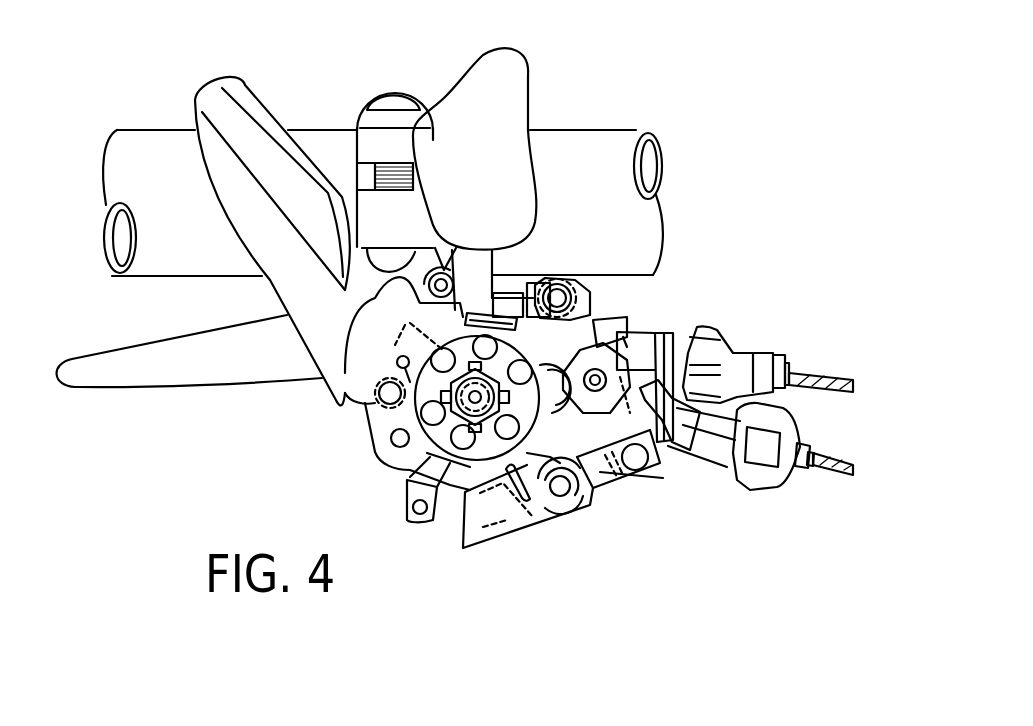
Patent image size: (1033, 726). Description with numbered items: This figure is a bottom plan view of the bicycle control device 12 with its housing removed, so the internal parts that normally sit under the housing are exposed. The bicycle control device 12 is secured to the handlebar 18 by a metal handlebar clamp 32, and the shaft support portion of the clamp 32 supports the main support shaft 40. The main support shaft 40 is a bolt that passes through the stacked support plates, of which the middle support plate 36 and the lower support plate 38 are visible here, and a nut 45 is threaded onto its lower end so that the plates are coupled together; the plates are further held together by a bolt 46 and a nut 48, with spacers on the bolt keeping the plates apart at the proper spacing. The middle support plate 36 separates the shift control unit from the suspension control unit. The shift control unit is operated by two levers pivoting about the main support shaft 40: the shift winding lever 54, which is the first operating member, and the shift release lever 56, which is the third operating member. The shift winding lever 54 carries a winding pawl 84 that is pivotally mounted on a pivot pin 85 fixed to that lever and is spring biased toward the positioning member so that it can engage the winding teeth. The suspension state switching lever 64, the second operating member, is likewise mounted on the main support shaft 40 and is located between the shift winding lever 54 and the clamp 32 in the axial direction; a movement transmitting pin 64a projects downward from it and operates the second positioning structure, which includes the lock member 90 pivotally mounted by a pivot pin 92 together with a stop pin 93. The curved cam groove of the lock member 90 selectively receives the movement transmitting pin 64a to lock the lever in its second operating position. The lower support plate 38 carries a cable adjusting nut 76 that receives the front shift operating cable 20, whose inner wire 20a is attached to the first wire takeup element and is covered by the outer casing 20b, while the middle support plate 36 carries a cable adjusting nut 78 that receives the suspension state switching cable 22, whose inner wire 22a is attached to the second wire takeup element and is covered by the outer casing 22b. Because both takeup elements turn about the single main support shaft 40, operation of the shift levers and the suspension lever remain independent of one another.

The bicycle control device 12 is at (718, 238).
The handlebar 18 is at (613, 130).
The front shift operating cable 20 is at (847, 557).
The inner wire 20a is at (833, 480).
The outer casing 20b is at (787, 482).
The suspension state switching cable 22 is at (862, 308).
The inner wire 22a is at (830, 372).
The outer casing 22b is at (780, 352).
The handlebar clamp 32 is at (367, 97).
The middle support plate 36 is at (656, 446).
The lower support plate 38 is at (657, 332).
The main support shaft 40 is at (375, 422).
The nut 45 is at (480, 462).
The bolt 46 is at (590, 300).
The nut 48 is at (567, 280).
The shift winding lever 54 is at (205, 85).
The shift release lever 56 is at (102, 393).
The suspension state switching lever 64 is at (540, 100).
The movement transmitting pin 64a is at (407, 506).
The cable adjusting nut 76 is at (741, 335).
The cable adjusting nut 78 is at (696, 462).
The winding pawl 84 is at (375, 445).
The pivot pin 85 is at (375, 398).
The lock member 90 is at (478, 552).
The pivot pin 92 is at (560, 492).
The stop pin 93 is at (635, 463).